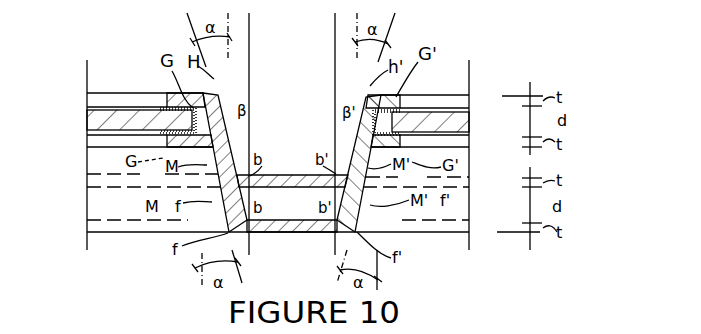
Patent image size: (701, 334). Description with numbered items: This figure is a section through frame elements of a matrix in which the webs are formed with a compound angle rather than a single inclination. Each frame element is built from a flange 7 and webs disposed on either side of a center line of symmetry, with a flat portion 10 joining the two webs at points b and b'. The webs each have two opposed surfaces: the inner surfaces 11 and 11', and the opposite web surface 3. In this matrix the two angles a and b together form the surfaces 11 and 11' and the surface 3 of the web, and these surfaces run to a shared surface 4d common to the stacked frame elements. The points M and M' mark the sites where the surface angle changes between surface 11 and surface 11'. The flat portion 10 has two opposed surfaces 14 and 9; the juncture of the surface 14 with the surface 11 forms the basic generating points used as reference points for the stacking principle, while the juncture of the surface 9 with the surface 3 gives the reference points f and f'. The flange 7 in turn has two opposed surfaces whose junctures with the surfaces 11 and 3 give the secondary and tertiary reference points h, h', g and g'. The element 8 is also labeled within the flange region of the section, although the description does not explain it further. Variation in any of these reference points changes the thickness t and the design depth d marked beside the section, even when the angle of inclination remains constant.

The web surface 3 is at (214, 227).
The flange 7 is at (167, 100).
The metal electrode 8 is at (113, 124).
The flat portion surface 9 is at (130, 234).
The flat portion 10 is at (306, 160).
The web surface 11 is at (283, 152).
The web surface 11' is at (303, 163).
The flat portion surface 14 is at (280, 174).
The shared surface 4d is at (278, 184).